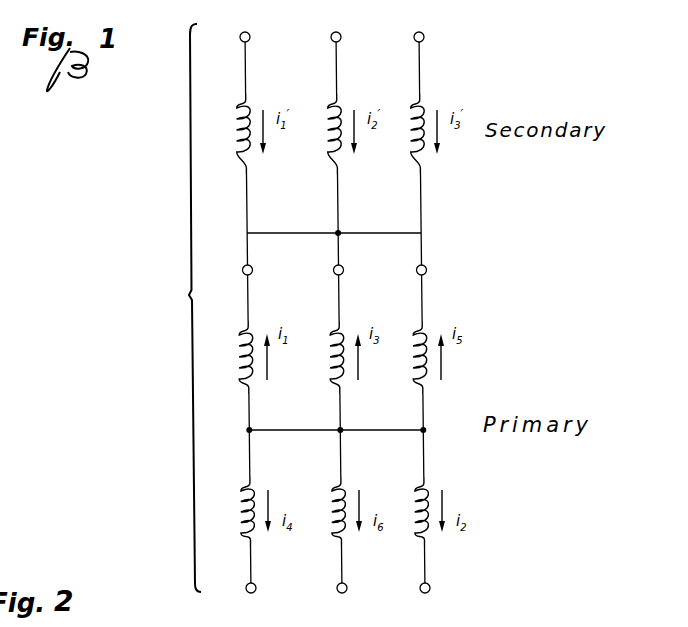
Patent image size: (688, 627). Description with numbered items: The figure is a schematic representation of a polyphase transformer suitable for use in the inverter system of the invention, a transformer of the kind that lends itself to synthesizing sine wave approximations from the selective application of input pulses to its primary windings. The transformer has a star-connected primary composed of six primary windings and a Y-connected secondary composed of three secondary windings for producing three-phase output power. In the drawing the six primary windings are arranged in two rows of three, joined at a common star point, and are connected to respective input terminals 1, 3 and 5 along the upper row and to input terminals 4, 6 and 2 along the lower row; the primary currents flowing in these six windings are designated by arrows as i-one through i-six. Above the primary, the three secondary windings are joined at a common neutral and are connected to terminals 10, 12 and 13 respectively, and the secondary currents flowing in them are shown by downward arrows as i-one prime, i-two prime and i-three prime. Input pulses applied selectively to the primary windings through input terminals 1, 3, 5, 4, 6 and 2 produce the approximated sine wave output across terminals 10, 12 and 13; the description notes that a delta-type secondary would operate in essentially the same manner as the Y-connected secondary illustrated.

The secondary terminal 10 is at (240, 39).
The secondary terminal 12 is at (331, 39).
The secondary terminal 13 is at (414, 39).
The input terminal 1 is at (251, 266).
The input terminal 3 is at (342, 266).
The input terminal 5 is at (425, 266).
The input terminal 4 is at (248, 593).
The input terminal 6 is at (339, 593).
The input terminal 2 is at (423, 593).